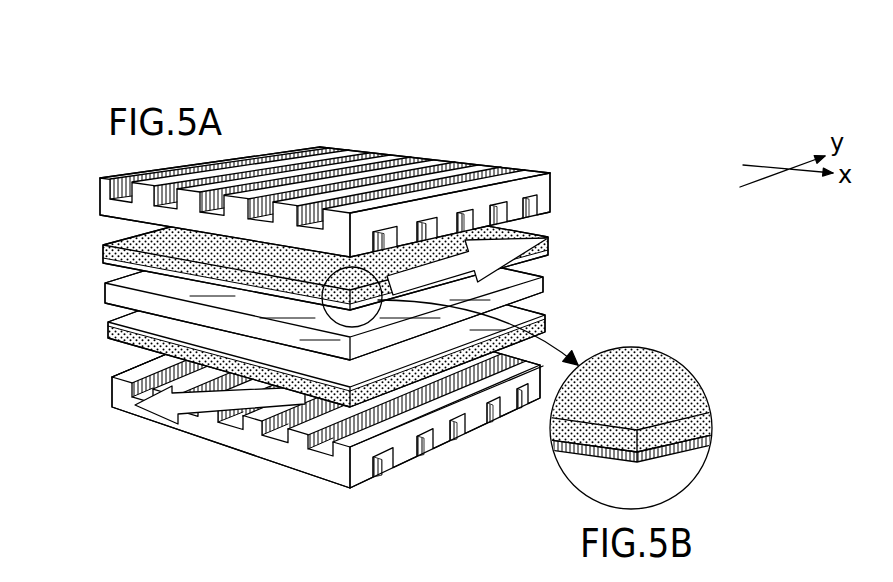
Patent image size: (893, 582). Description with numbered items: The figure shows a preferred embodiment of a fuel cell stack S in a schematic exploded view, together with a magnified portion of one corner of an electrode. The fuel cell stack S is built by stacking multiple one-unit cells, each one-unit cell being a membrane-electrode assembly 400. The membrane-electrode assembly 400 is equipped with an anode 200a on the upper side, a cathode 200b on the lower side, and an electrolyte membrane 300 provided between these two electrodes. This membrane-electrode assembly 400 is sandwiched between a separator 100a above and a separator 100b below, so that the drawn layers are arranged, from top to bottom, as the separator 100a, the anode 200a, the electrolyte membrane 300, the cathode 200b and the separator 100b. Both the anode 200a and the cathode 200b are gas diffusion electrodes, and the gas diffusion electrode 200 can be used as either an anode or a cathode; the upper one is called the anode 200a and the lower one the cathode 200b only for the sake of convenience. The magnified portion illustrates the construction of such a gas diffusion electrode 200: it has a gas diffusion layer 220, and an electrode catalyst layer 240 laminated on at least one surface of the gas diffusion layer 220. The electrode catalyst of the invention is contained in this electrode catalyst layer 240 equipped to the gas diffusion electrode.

In FIG. 5A, the fuel cell stack S is at (633, 92).
In FIG. 5A, the separator 100a is at (554, 173).
In FIG. 5A, the separator 100b is at (305, 463).
In FIG. 5A, the gas diffusion electrode 200 is at (704, 197).
In FIG. 5A, the anode 200a is at (554, 240).
In FIG. 5A, the cathode 200b is at (547, 316).
In FIG. 5A, the electrolyte membrane 300 is at (548, 280).
In FIG. 5A, the membrane-electrode assembly 400 is at (90, 228).
In FIG. 5B, the gas diffusion layer 220 is at (688, 407).
In FIG. 5B, the electrode catalyst layer 240 is at (692, 449).